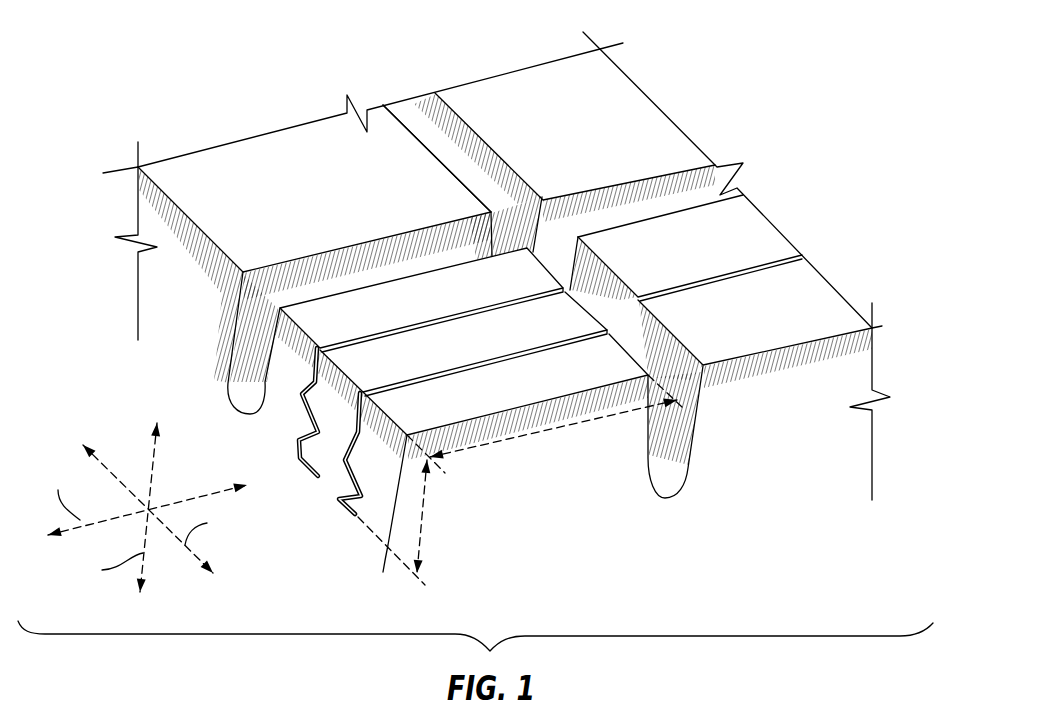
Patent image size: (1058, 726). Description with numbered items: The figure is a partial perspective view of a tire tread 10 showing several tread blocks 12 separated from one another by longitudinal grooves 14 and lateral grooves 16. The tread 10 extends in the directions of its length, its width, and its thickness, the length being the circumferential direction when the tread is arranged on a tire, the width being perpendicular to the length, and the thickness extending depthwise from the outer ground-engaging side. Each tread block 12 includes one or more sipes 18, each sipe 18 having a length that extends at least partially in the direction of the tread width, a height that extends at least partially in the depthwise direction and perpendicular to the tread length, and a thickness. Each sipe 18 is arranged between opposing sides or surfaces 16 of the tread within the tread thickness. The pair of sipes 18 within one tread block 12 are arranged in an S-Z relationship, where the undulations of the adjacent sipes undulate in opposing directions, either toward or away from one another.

The tire tread 10 is at (790, 53).
The tread block 12 is at (400, 293).
The longitudinal groove 14 is at (470, 157).
The lateral groove 16 is at (237, 360).
The sipe 18 is at (480, 308).